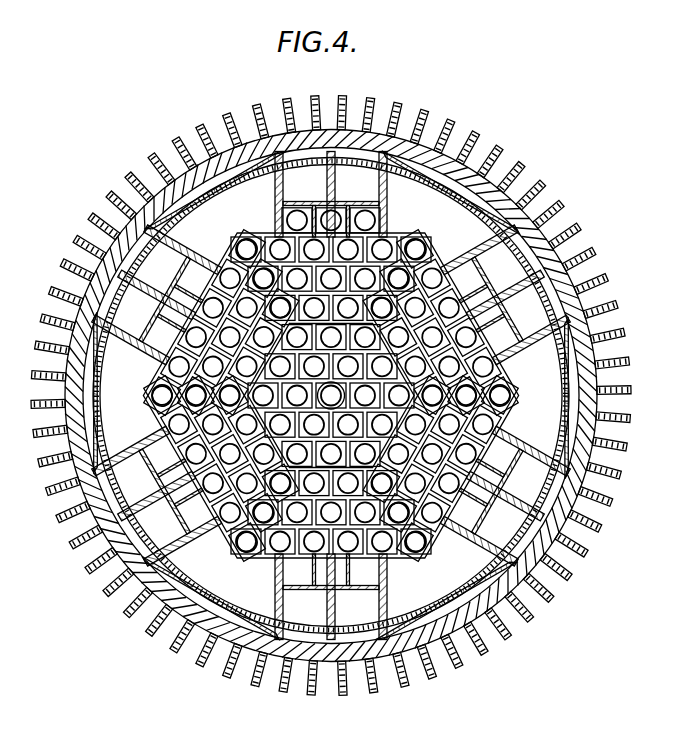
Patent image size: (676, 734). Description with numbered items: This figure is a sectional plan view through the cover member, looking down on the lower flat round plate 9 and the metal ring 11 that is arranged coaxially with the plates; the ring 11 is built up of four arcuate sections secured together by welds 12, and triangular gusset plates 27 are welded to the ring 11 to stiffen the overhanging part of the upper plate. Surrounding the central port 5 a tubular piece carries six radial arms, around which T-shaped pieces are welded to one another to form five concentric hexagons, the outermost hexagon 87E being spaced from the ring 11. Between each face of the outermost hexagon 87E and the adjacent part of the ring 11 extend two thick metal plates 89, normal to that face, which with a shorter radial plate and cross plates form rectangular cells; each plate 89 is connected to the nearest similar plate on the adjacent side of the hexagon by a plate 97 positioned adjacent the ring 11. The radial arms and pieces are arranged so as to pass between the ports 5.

The port 5 is at (331, 387).
The lower flat round plate 9 is at (148, 237).
The metal ring 11 is at (202, 168).
The welds 12 is at (333, 388).
The triangular gusset plates 27 is at (331, 395).
The outermost hexagon 87E is at (348, 395).
The thick metal plates 89 is at (331, 396).
The plate 97 is at (331, 396).